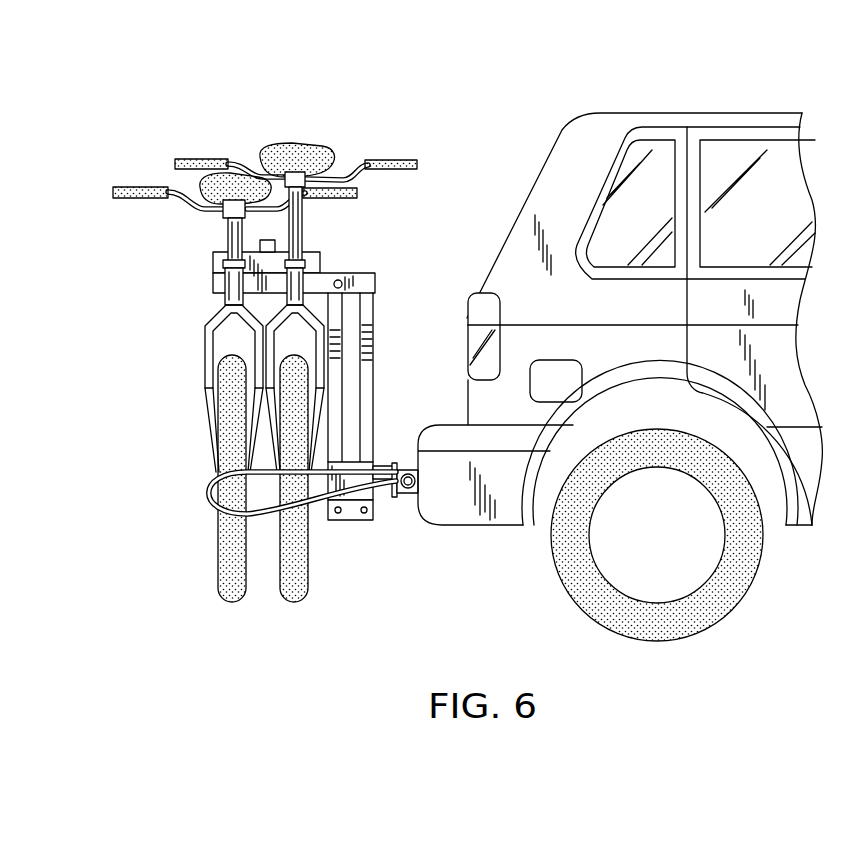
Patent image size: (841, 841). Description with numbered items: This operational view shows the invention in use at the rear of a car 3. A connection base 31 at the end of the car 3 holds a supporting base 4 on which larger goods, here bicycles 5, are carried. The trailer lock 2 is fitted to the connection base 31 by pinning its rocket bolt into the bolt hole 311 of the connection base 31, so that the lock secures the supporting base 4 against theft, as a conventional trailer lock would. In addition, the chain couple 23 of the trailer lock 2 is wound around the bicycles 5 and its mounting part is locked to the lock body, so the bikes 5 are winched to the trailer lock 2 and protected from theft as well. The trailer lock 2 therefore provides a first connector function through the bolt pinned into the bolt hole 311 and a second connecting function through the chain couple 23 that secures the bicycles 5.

The trailer lock 2 is at (408, 496).
The car 3 is at (547, 162).
The supporting base 4 is at (368, 315).
The bicycles 5 is at (293, 145).
The chain couple 23 is at (318, 493).
The connection base 31 is at (398, 468).
The bolt hole 311 is at (410, 497).